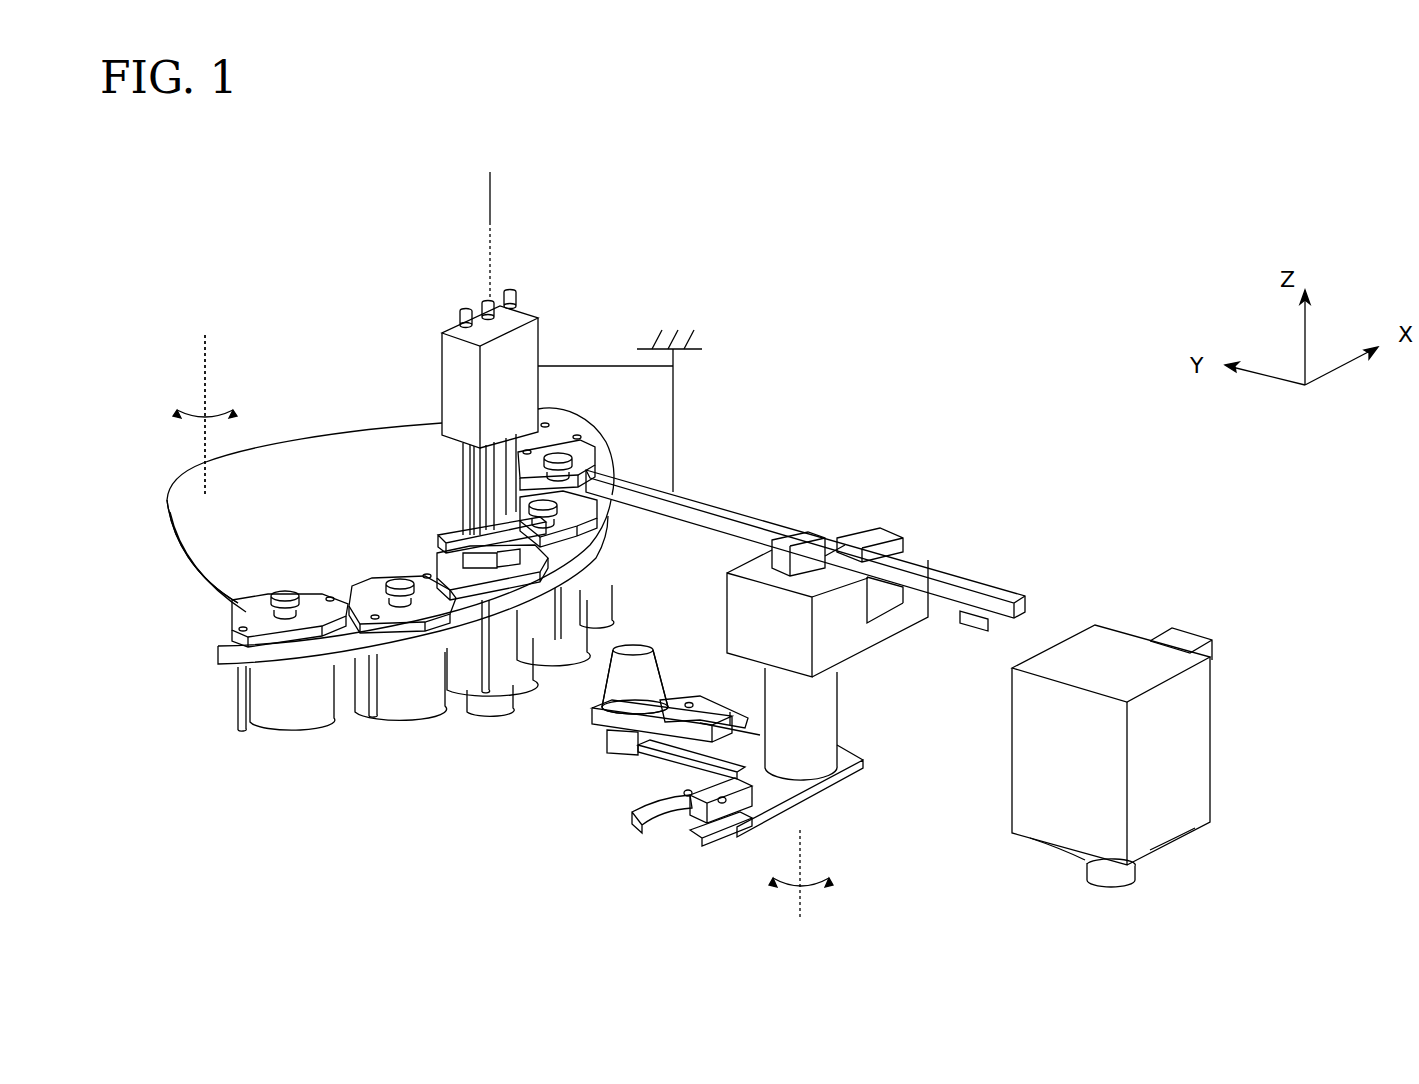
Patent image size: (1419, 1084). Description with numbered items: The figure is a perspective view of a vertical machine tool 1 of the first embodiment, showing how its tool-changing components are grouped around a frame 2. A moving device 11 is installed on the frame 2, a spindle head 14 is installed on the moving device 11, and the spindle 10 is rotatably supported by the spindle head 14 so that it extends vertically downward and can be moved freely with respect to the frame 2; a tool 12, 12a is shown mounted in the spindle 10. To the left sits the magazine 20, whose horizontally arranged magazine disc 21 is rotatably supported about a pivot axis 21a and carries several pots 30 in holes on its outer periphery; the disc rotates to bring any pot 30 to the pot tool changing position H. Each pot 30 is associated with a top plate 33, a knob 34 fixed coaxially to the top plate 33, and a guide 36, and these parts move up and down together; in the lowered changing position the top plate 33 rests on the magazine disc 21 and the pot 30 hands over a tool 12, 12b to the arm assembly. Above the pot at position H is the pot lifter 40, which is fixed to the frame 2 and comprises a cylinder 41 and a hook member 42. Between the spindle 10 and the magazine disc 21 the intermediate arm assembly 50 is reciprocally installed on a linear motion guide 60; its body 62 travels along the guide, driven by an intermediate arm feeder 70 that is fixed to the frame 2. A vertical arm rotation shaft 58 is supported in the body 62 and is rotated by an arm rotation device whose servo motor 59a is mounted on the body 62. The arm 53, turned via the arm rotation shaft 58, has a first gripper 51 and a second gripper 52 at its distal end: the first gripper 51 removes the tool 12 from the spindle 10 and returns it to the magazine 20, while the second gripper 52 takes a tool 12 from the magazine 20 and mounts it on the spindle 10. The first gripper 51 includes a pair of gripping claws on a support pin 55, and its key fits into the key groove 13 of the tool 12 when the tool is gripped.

The battery manufacturing apparatus 1 is at (1178, 174).
The pot tool changing position H is at (490, 220).
The frame 2 is at (700, 352).
The spindle 10 is at (1134, 766).
The moving device 11 is at (1196, 634).
The tool 12 is at (792, 795).
The electrode terminal cap 12a is at (1105, 888).
The electrode terminal cap workpiece 12b is at (640, 650).
The key groove 13 is at (665, 715).
The spindle head 14 is at (1212, 735).
The magazine 20 is at (315, 429).
The magazine disc 21 is at (166, 502).
The pivot axis 21a is at (204, 367).
The pot 30 is at (300, 730).
The top plate 33 is at (333, 597).
The knob 34 is at (287, 592).
The guide 36 is at (238, 722).
The pot lifter 40 is at (509, 441).
The cylinder 41 is at (440, 350).
The hook member 42 is at (515, 560).
The intermediate arm assembly 50 is at (748, 786).
The first gripper 51 is at (636, 828).
The second gripper 52 is at (600, 718).
The arm 53 is at (800, 805).
The support pin 55 is at (685, 792).
The arm rotation shaft 58 is at (837, 712).
The servo motor 59a is at (885, 530).
The linear motion guide 60 is at (950, 572).
The body 62 is at (855, 650).
The intermediate arm feeder 70 is at (975, 625).